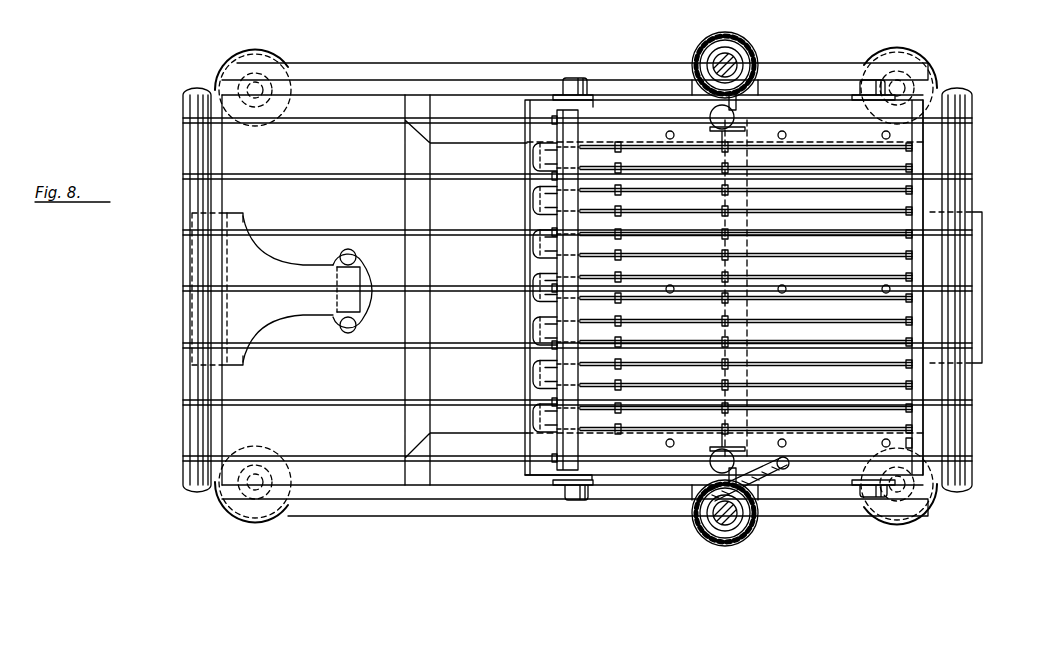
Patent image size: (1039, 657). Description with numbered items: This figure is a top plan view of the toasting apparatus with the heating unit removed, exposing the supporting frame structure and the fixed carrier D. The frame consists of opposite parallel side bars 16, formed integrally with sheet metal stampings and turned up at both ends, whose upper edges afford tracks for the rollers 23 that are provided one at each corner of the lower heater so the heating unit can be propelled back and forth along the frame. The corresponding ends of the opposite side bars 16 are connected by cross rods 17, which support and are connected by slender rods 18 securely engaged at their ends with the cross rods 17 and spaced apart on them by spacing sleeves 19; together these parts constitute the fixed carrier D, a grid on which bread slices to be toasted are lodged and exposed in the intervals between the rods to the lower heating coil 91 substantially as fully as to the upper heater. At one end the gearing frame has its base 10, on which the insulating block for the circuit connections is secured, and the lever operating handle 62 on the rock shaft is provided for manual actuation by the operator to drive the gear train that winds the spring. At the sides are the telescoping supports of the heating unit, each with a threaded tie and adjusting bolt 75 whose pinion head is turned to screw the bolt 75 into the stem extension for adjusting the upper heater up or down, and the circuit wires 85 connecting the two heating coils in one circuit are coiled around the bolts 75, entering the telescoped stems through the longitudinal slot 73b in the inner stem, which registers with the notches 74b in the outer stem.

The base 10 is at (360, 382).
The side bars 16 is at (371, 80).
The cross rods 17 is at (183, 113).
The slender rods 18 is at (527, 165).
The spacing sleeves 19 is at (183, 178).
The rollers 23 is at (575, 88).
The lever operating handle 62 is at (977, 212).
The longitudinal slot 73b is at (735, 117).
The notches 74b is at (729, 100).
The tie and adjusting bolt 75 is at (720, 34).
The circuit wires 85 is at (752, 50).
The heating coil 91 is at (900, 438).
The fixed carrier D is at (183, 268).